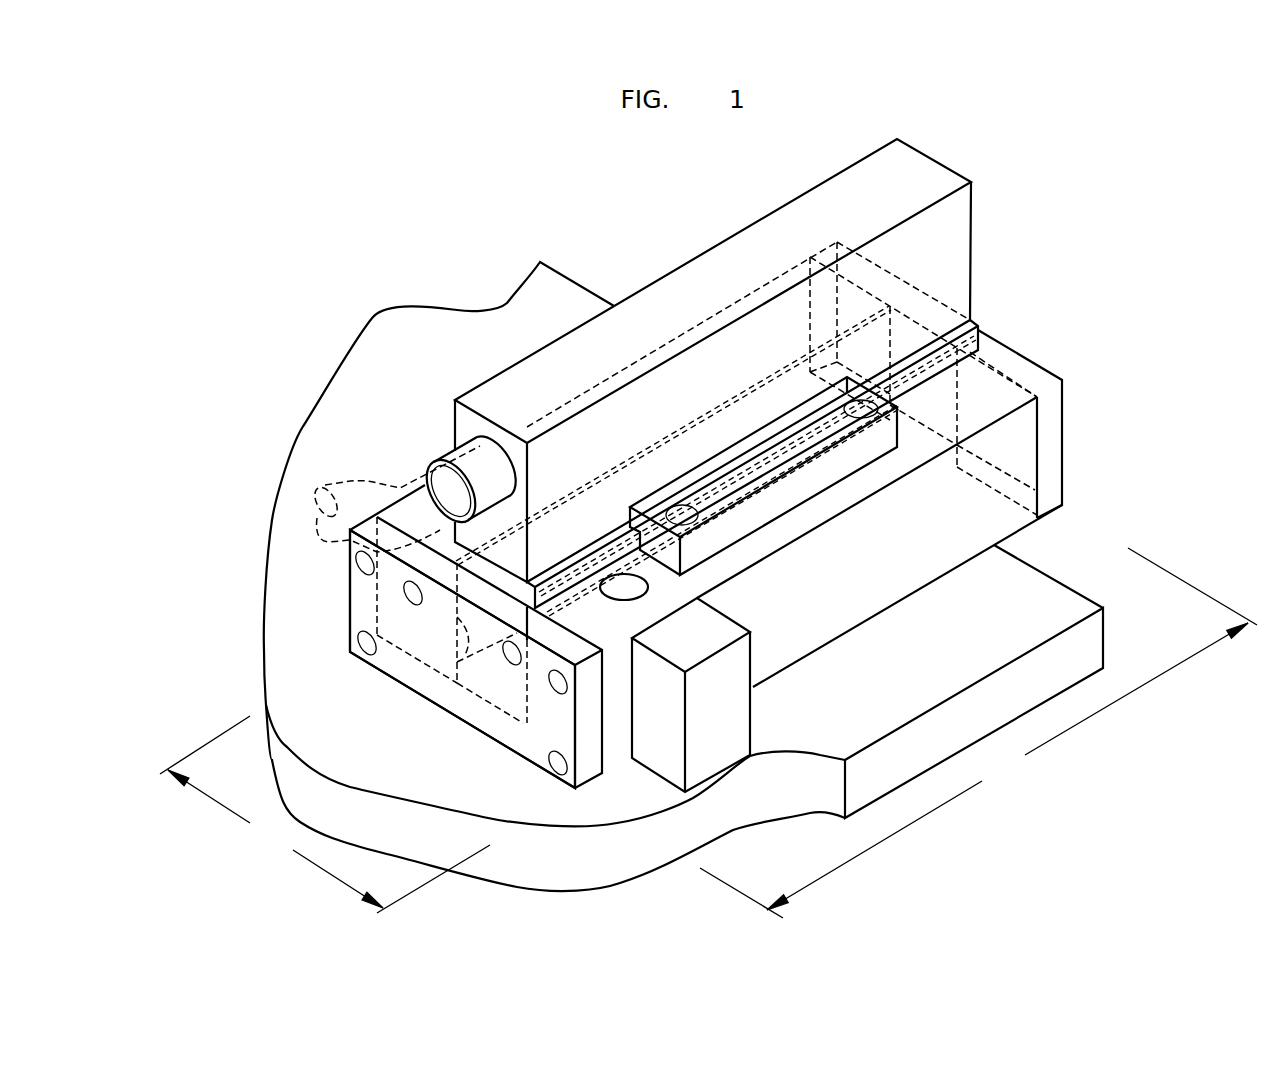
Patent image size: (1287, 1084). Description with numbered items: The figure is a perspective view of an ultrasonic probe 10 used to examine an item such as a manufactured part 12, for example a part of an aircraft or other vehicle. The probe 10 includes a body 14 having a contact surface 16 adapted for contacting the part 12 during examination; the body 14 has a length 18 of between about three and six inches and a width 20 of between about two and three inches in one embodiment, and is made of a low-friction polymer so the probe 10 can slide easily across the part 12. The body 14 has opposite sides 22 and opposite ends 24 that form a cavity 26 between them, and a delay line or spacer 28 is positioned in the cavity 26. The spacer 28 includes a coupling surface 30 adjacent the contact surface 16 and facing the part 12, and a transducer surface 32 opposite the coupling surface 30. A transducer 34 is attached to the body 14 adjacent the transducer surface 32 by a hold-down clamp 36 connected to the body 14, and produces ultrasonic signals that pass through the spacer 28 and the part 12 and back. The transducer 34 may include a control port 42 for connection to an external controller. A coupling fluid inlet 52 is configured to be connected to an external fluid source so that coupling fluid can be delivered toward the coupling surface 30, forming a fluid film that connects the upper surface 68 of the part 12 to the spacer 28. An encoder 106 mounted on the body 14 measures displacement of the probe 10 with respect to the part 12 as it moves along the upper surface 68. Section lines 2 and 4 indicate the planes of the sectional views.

The section line 2- 2 is at (445, 332).
The section line 4- 4 is at (1048, 343).
The ultrasonic probe 10 is at (1040, 158).
The manufactured part 12 is at (522, 288).
The body 14 is at (1123, 360).
The contact surface 16 is at (843, 600).
The length 18 is at (978, 733).
The width 20 is at (325, 814).
The opposite sides 22 is at (1062, 448).
The opposite ends 24 is at (1040, 398).
The cavity 26 is at (458, 678).
The spacer 28 is at (862, 500).
The coupling surface 30 is at (903, 490).
The transducer surface 32 is at (787, 400).
The transducer 34 is at (658, 260).
The hold-down clamp 36 is at (740, 538).
The control port 42 is at (452, 456).
The coupling fluid inlet 52 is at (623, 602).
The upper surface 68 is at (478, 804).
The encoder 106 is at (640, 795).